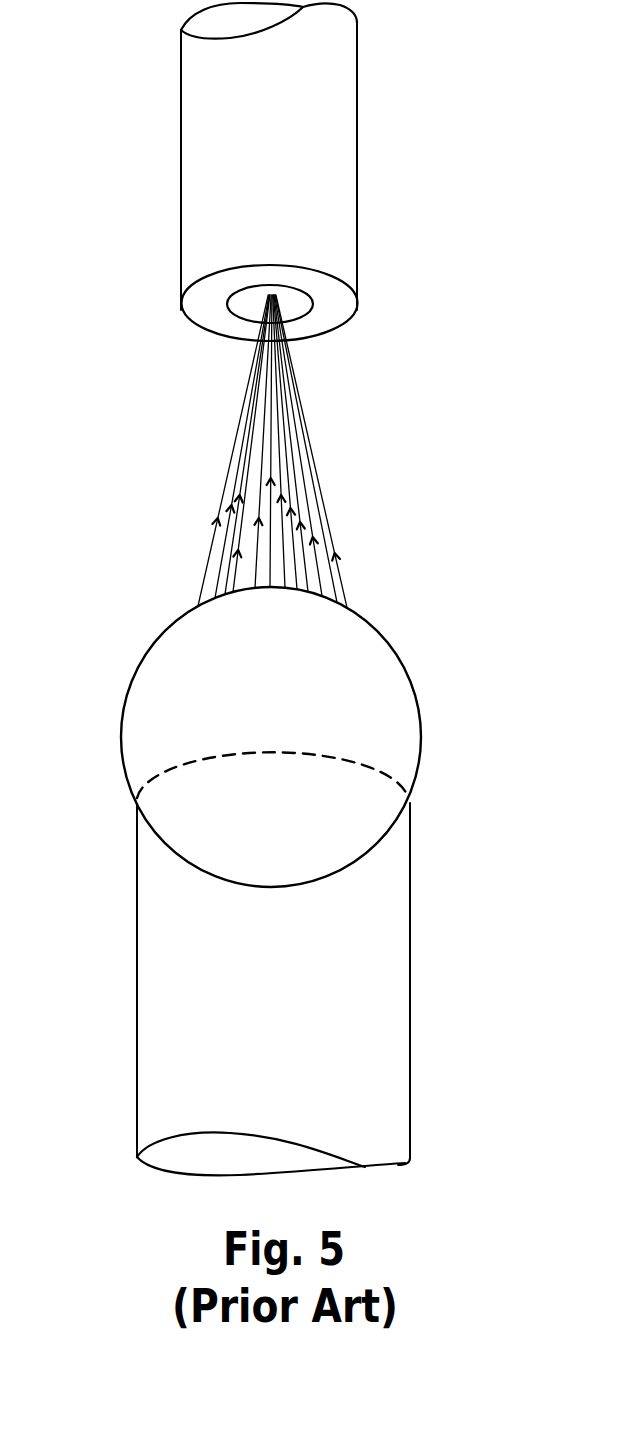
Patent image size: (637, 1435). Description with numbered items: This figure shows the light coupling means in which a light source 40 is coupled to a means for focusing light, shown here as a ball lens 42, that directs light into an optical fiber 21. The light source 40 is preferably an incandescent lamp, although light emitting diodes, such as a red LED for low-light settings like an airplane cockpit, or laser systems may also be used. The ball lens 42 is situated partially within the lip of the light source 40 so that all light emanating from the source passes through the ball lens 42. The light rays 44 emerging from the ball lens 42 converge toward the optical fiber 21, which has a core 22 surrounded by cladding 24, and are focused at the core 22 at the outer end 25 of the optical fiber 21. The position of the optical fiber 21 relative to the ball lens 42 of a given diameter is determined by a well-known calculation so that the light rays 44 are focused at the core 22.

The optical fiber 21 is at (332, 156).
The core 22 is at (244, 307).
The cladding 24 is at (332, 300).
The outer end 25 is at (231, 266).
The light source 40 is at (390, 1022).
The ball lens 42 is at (413, 686).
The light rays 44 is at (297, 437).